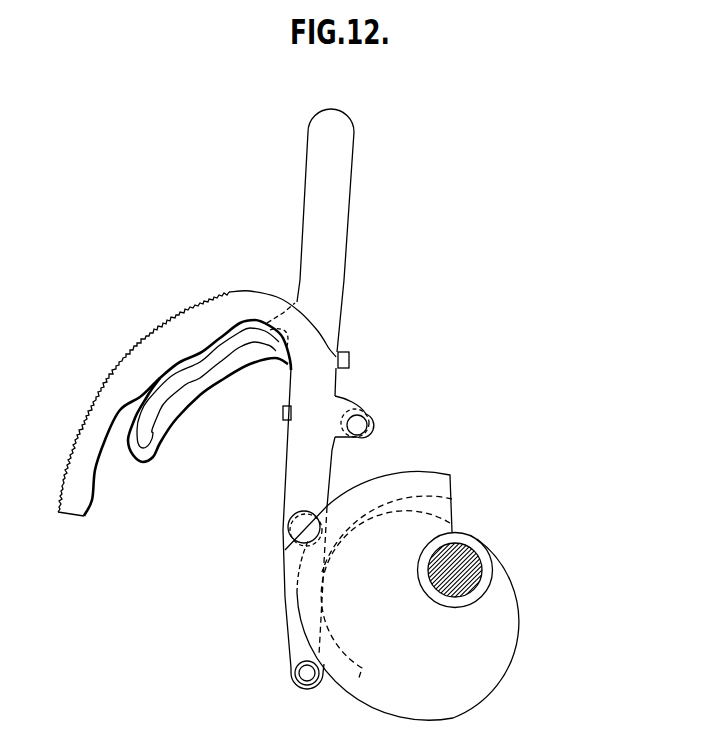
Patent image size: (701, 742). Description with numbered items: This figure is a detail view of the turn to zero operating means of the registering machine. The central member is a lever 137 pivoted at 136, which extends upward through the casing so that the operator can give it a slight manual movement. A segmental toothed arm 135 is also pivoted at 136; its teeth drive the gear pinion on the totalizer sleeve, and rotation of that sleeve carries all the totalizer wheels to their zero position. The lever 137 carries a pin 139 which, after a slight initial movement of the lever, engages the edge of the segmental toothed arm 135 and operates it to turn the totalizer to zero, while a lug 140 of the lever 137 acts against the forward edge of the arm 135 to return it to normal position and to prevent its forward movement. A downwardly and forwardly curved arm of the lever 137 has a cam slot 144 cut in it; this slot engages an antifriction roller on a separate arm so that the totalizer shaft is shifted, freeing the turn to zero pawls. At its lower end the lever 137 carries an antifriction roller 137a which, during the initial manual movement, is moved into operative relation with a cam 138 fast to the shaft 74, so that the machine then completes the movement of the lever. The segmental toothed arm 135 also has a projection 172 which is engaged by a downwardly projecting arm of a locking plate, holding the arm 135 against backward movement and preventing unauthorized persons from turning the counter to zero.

The lever 137 is at (345, 277).
The segmental toothed arm 135 is at (112, 378).
The cam slot 144 is at (172, 402).
The projection 172 is at (352, 365).
The lug 140 is at (283, 412).
The pin 139 is at (369, 425).
The pivot 136 is at (295, 529).
The cam 138 is at (507, 668).
The shaft 74 is at (480, 567).
The antifriction roller 137a is at (297, 681).